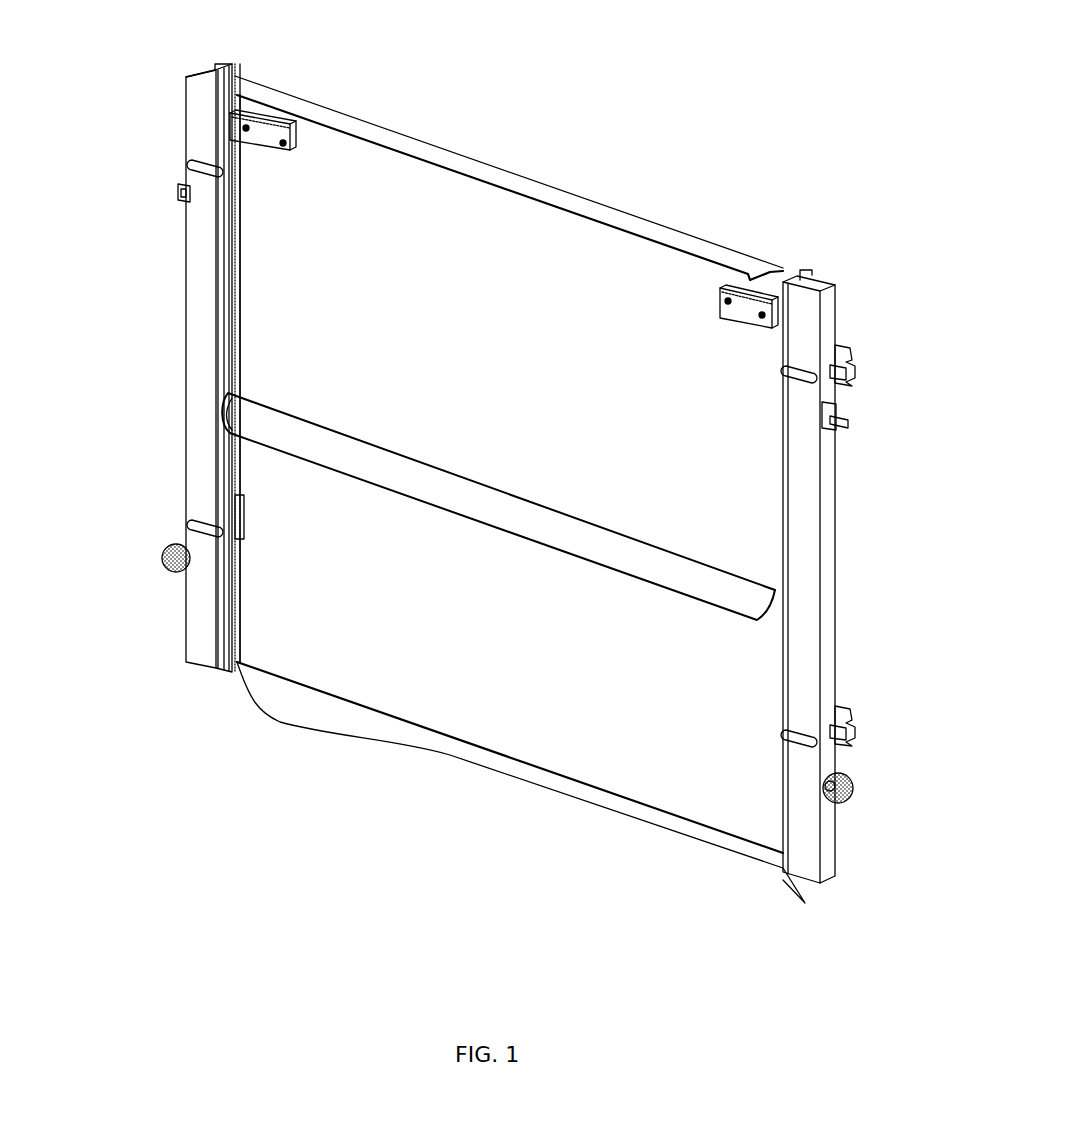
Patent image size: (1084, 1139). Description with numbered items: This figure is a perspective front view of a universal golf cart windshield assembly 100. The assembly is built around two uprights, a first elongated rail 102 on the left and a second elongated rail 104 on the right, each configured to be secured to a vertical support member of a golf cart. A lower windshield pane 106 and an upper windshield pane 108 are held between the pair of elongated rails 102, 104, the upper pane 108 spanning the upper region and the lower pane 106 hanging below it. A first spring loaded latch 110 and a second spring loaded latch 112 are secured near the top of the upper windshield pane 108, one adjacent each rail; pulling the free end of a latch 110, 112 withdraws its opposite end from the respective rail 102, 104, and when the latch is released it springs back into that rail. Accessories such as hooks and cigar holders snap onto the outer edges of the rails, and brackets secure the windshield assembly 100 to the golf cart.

The universal golf cart windshield assembly 100 is at (574, 132).
The first elongated rail 102 is at (194, 352).
The second elongated rail 104 is at (836, 587).
The lower windshield pane 106 is at (603, 762).
The upper windshield pane 108 is at (628, 256).
The first spring loaded latch 110 is at (262, 120).
The second spring loaded latch 112 is at (740, 316).